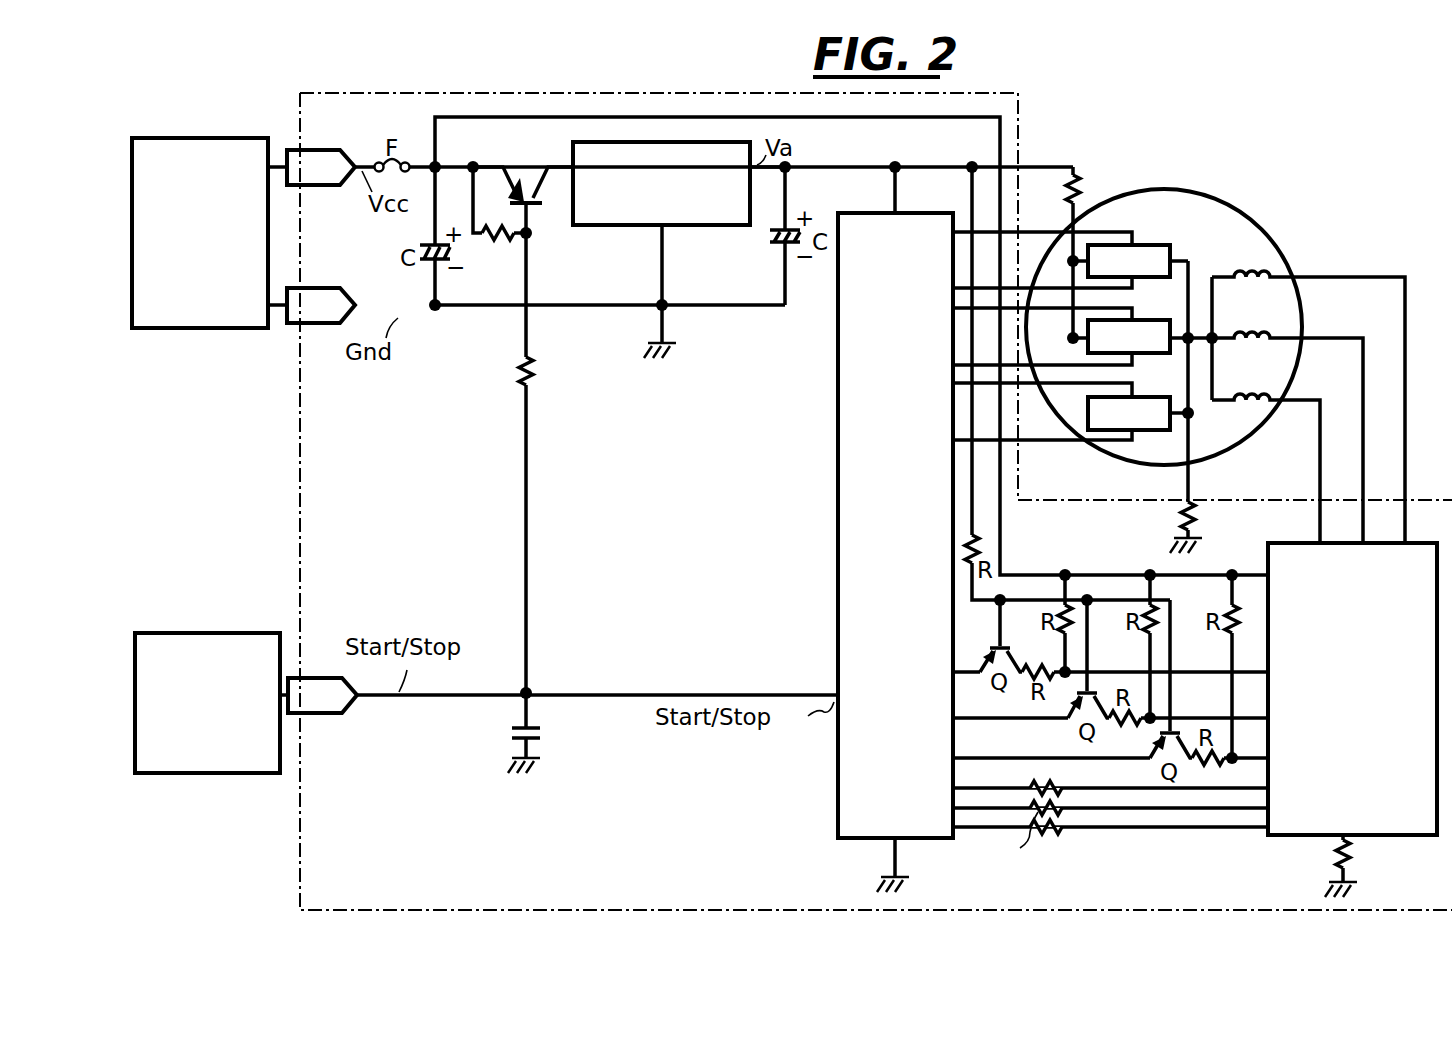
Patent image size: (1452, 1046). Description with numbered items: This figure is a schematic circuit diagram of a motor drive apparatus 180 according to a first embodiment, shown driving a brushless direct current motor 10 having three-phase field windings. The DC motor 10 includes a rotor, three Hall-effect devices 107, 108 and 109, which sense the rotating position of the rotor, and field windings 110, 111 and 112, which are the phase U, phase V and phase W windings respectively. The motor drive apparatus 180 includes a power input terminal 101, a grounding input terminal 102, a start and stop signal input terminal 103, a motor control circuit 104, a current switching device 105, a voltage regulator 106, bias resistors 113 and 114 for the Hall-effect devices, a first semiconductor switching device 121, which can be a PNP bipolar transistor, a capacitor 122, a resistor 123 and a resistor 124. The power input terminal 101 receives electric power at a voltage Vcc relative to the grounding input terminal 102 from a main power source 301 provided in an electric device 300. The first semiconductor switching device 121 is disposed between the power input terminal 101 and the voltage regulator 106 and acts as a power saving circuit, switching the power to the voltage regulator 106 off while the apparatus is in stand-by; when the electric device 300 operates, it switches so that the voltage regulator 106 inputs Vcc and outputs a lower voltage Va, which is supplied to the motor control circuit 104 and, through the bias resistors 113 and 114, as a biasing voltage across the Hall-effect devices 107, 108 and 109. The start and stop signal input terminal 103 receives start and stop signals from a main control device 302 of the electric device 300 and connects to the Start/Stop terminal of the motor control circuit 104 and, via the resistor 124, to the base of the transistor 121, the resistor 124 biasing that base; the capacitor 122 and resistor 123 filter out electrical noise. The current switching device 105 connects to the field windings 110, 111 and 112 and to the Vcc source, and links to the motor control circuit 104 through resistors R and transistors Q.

The electric device 300 is at (216, 108).
The main power source 301 is at (178, 330).
The main control device 302 is at (178, 775).
The power input terminal 101 is at (311, 147).
The grounding input terminal 102 is at (311, 287).
The start and stop signal input terminal 103 is at (352, 712).
The motor control circuit 104 is at (838, 370).
The current switching device 105 is at (1305, 836).
The voltage regulator 106 is at (620, 228).
The Hall-effect device 107 is at (1143, 245).
The Hall-effect device 108 is at (1165, 320).
The Hall-effect device 109 is at (1145, 430).
The field winding 110 is at (1272, 275).
The field winding 111 is at (1272, 336).
The field winding 112 is at (1272, 398).
The bias resistor 113 is at (1078, 178).
The bias resistor 114 is at (1172, 524).
The first semiconductor switching device 121 is at (520, 189).
The capacitor 122 is at (514, 734).
The resistor 123 is at (522, 377).
The resistor 124 is at (492, 243).
The motor drive apparatus 180 is at (1018, 107).
The brushless direct current motor 10 is at (1268, 232).